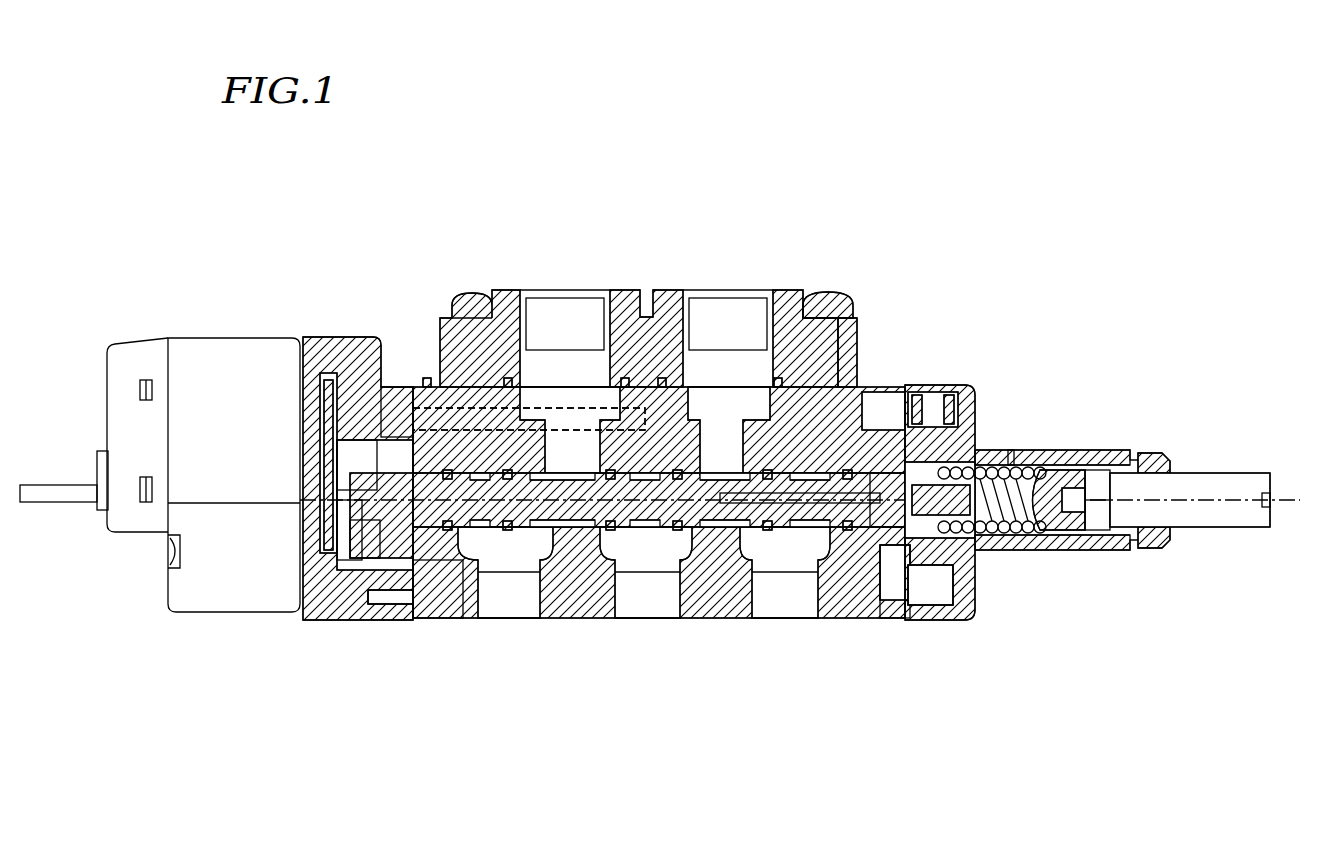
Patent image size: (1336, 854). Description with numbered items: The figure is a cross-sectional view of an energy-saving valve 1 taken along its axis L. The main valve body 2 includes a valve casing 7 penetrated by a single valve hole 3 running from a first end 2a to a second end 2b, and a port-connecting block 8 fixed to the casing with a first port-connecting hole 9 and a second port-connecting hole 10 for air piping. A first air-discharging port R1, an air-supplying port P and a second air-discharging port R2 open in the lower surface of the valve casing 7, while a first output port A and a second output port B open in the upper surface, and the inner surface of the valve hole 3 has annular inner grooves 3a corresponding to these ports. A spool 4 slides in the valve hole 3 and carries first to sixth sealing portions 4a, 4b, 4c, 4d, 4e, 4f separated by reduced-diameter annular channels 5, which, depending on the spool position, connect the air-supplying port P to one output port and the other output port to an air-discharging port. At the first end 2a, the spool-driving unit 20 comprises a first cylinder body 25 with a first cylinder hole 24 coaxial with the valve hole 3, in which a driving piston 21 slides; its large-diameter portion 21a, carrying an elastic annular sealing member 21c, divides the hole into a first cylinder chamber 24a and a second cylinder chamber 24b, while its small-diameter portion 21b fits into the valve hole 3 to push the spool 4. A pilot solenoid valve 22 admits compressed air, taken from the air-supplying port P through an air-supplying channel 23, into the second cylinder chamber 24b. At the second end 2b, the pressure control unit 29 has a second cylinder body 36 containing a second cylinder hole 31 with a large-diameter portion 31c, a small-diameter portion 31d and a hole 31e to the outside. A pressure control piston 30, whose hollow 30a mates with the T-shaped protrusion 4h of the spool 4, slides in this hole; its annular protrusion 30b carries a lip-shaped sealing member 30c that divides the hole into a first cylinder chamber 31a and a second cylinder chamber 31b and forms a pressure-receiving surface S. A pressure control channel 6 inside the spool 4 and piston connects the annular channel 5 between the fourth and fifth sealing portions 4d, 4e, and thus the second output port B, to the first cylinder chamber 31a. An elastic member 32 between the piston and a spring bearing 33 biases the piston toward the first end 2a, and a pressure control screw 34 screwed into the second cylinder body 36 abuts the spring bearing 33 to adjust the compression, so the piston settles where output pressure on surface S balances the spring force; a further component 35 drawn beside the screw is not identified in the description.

The valve 1 is at (645, 348).
The main valve body 2 is at (738, 216).
The first end 2a is at (392, 606).
The second end 2b is at (900, 610).
The valve hole 3 is at (540, 440).
The annular inner grooves 3a is at (580, 562).
The spool 4 is at (680, 480).
The first sealing portion 4a is at (460, 540).
The second sealing portion 4b is at (545, 540).
The third sealing portion 4c is at (628, 540).
The fourth sealing portion 4d is at (695, 540).
The fifth sealing portion 4e is at (772, 540).
The sixth sealing portion 4f is at (845, 540).
The protrusion 4h is at (878, 462).
The annular channels 5 is at (725, 540).
The pressure control channel 6 is at (845, 440).
The valve casing 7 is at (812, 420).
The port-connecting block 8 is at (790, 312).
The first port-connecting hole 9 is at (552, 340).
The second port-connecting hole 10 is at (713, 340).
The spool-driving unit 20 is at (260, 419).
The driving piston 21 is at (400, 415).
The large-diameter portion 21a is at (372, 477).
The small-diameter portion 21b is at (400, 577).
The elastic annular sealing member 21c is at (360, 600).
The pilot solenoid valve 22 is at (205, 355).
The air-supplying channel 23 is at (633, 420).
The first cylinder hole 24 is at (305, 683).
The first cylinder chamber 24a is at (357, 550).
The second cylinder chamber 24b is at (347, 533).
The first cylinder body 25 is at (340, 560).
The pressure control unit 29 is at (1075, 379).
The pressure control piston 30 is at (950, 400).
The hollow 30a is at (920, 420).
The annular protrusion 30b is at (925, 606).
The lip-shaped sealing member 30c is at (912, 612).
The second cylinder hole 31 is at (1110, 620).
The first cylinder chamber 31a is at (900, 445).
The second cylinder chamber 31b is at (985, 465).
The large-diameter portion 31c is at (978, 537).
The small-diameter portion 31d is at (1042, 535).
The hole 31e is at (1012, 468).
The elastic member 32 is at (1045, 480).
The spring bearing 33 is at (1088, 470).
The pressure control screw 34 is at (1220, 482).
The nut 35 is at (1150, 455).
The second cylinder body 36 is at (965, 602).
The first output port A is at (529, 406).
The second output port B is at (712, 420).
The air-supplying port P is at (650, 592).
The first air-discharging port R1 is at (508, 592).
The second air-discharging port R2 is at (800, 592).
The pressure-receiving surface S is at (884, 575).
The axis L is at (1206, 499).